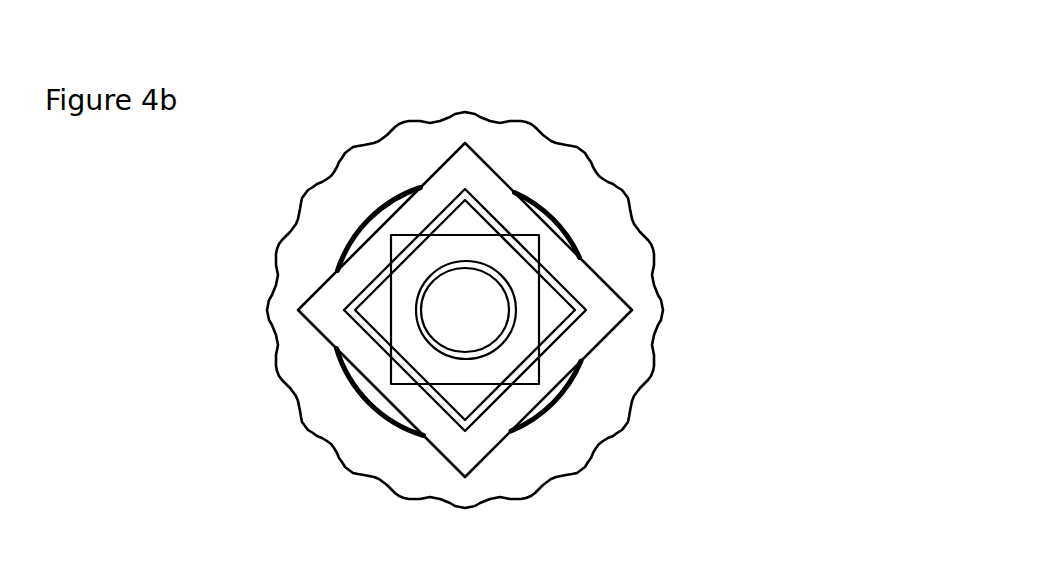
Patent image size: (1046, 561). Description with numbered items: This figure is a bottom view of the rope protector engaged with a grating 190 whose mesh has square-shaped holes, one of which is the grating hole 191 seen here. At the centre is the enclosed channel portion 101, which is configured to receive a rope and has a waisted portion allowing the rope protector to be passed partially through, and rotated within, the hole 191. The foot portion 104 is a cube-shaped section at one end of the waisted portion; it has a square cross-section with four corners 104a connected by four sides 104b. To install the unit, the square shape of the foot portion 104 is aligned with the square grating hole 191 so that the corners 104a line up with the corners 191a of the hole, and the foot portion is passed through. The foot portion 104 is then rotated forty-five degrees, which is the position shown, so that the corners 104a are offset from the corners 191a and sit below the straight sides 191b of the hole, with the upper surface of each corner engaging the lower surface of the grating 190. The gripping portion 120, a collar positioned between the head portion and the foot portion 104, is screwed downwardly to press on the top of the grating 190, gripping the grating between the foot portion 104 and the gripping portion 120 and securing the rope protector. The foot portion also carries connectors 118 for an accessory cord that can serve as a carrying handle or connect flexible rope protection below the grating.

The gripping portion 120 is at (560, 137).
The connectors 118 is at (540, 243).
The straight sides of the grating hole 191b is at (558, 286).
The hole in the grating 191 is at (550, 312).
The grating 190 is at (578, 341).
The corners of the grating hole 191a is at (468, 307).
The enclosed channel portion 101 is at (432, 363).
The foot portion 104 is at (375, 360).
The corners of the foot portion 104a is at (540, 383).
The sides of the foot portion 104b is at (461, 384).